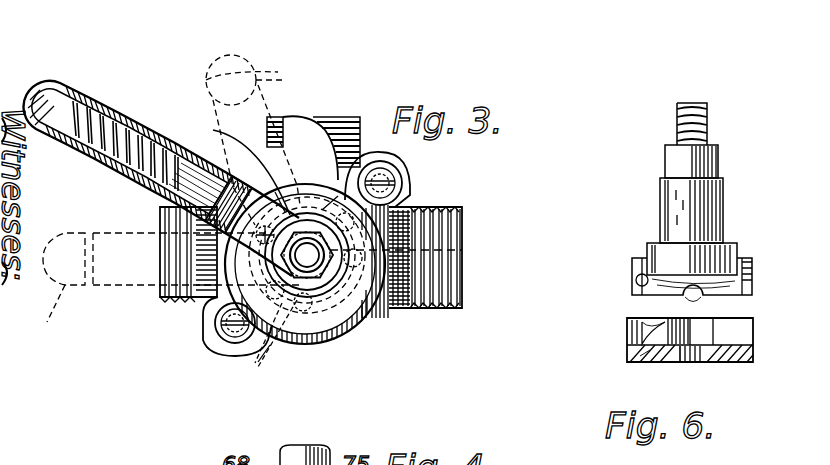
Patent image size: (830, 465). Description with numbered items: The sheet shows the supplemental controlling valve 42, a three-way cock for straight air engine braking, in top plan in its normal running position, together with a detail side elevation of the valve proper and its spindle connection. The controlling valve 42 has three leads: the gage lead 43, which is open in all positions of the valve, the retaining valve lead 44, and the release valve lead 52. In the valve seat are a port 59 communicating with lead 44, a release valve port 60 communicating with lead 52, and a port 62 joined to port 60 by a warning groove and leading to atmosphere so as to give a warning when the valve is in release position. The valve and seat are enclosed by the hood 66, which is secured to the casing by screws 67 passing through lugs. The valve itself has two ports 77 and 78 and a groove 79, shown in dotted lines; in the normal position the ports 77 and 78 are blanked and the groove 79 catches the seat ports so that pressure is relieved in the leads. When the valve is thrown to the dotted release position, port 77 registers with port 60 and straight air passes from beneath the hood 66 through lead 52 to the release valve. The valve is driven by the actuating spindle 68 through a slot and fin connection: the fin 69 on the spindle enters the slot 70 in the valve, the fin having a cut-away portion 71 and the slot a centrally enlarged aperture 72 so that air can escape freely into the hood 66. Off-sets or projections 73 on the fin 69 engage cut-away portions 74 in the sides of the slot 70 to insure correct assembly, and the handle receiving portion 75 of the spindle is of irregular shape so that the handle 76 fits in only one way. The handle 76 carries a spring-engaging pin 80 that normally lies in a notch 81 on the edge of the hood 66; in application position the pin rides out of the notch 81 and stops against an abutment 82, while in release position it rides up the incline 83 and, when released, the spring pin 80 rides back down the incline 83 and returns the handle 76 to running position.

In FIG. 3, the supplemental controlling valve 42 is at (378, 318).
In FIG. 3, the gage lead 43 is at (332, 122).
In FIG. 3, the retaining valve lead 44 is at (160, 262).
In FIG. 3, the release valve lead 52 is at (460, 240).
In FIG. 3, the valve seat port 59 is at (237, 319).
In FIG. 3, the release valve port 60 is at (328, 283).
In FIG. 3, the atmosphere port 62 is at (276, 341).
In FIG. 3, the hood 66 is at (344, 340).
In FIG. 3, the screws 67 is at (235, 330).
In FIG. 3, the actuating spindle 68 is at (307, 250).
In FIG. 6, the actuating spindle 68 is at (676, 215).
In FIG. 6, the fin 69 is at (754, 282).
In FIG. 6, the slot 70 is at (758, 333).
In FIG. 6, the cut-away portion 71 is at (693, 296).
In FIG. 6, the centrally enlarged aperture 72 is at (665, 358).
In FIG. 6, the off-sets or projections 73 is at (636, 282).
In FIG. 6, the cut-away portions 74 is at (648, 330).
In FIG. 3, the handle receiving portion 75 is at (377, 190).
In FIG. 6, the handle receiving portion 75 is at (708, 160).
In FIG. 3, the handle 76 is at (120, 120).
In FIG. 3, the valve port 77 is at (339, 192).
In FIG. 3, the valve port 78 is at (297, 259).
In FIG. 3, the groove 79 is at (257, 368).
In FIG. 6, the groove 79 is at (645, 356).
In FIG. 3, the spring-engaging pin 80 is at (251, 140).
In FIG. 3, the notch 81 is at (271, 189).
In FIG. 3, the abutment 82 is at (210, 292).
In FIG. 3, the incline 83 is at (239, 143).